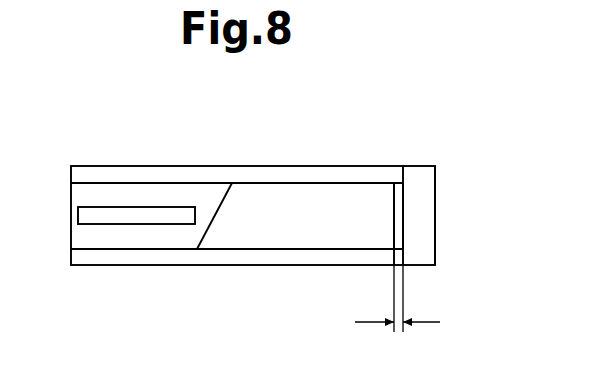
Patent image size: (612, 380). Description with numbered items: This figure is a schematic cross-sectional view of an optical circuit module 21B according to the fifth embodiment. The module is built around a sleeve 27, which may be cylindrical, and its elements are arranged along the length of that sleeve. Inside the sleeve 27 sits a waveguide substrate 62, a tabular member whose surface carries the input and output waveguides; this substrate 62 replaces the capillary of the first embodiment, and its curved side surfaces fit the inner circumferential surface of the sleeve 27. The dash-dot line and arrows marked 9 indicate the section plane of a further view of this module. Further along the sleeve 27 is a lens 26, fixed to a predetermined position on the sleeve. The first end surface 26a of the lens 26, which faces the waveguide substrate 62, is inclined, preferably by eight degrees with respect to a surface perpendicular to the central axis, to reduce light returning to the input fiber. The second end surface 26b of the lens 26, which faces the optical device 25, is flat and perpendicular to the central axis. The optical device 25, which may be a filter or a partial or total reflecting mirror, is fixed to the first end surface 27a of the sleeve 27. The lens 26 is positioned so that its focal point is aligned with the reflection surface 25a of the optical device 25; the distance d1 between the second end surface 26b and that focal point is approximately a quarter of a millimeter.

The optical circuit module 21B is at (292, 158).
The sleeve 27 is at (188, 174).
The first end surface of the sleeve 27a is at (403, 257).
The lens 26 is at (267, 235).
The first end surface of the lens 26a is at (213, 218).
The second end surface of the lens 26b is at (396, 212).
The optical device 25 is at (417, 178).
The reflection surface 25a is at (398, 230).
The waveguide substrate 62 is at (98, 197).
The section line 9- 9 is at (98, 166).
The distance d1 is at (397, 325).